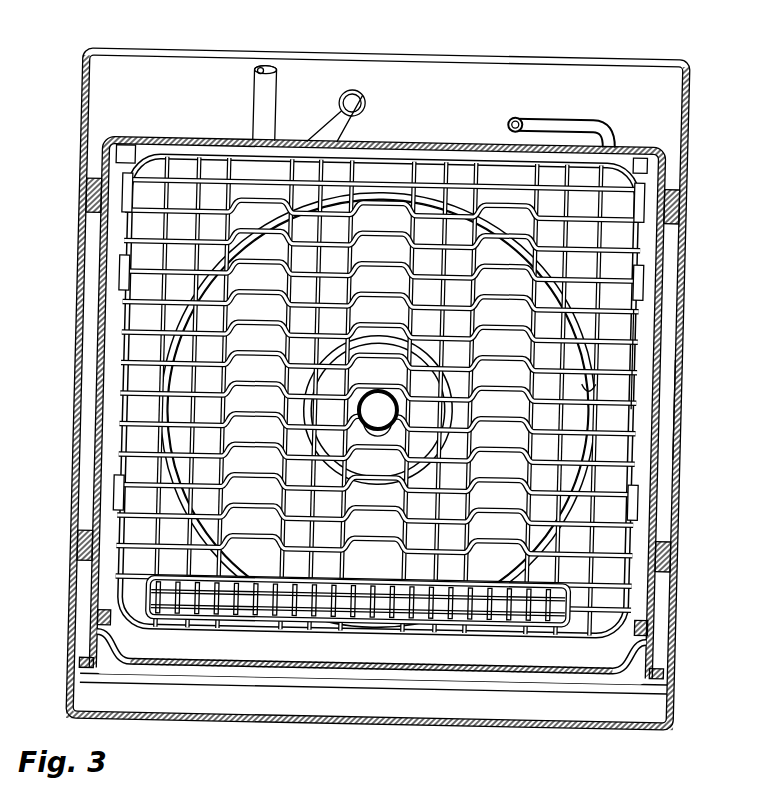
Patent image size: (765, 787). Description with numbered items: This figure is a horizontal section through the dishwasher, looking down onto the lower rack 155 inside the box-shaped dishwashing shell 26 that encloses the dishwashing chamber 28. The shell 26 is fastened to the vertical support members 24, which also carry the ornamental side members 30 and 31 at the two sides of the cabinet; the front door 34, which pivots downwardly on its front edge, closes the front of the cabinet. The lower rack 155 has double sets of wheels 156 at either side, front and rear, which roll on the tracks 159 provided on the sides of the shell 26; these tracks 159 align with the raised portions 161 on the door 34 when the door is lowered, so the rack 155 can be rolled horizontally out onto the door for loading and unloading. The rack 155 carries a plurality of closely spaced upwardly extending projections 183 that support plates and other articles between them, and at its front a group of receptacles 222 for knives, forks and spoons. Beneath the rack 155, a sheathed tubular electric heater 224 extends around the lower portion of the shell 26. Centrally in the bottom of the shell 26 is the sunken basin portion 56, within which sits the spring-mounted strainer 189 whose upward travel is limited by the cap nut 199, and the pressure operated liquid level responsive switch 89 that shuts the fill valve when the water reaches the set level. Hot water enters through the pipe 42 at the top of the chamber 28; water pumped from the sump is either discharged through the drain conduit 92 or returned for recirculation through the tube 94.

The vertical support members 24 is at (380, 373).
The dishwashing shell 26 is at (378, 377).
The dishwashing chamber 28 is at (330, 395).
The ornamental side member 30 is at (347, 388).
The ornamental side member 31 is at (719, 411).
The front door 34 is at (372, 723).
The pipe 42 is at (557, 115).
The sunken basin portion 56 is at (379, 373).
The pressure operated liquid level responsive switch 89 is at (441, 411).
The drain conduit 92 is at (271, 81).
The tube 94 is at (326, 107).
The lower rack 155 is at (678, 360).
The wheels 156 is at (377, 387).
The tracks 159 is at (382, 134).
The raised portions 161 is at (371, 653).
The upwardly extending projections 183 is at (379, 335).
The strainer 189 is at (342, 409).
The cap nut 199 is at (376, 451).
The receptacles 222 is at (357, 624).
The electric heater 224 is at (653, 388).